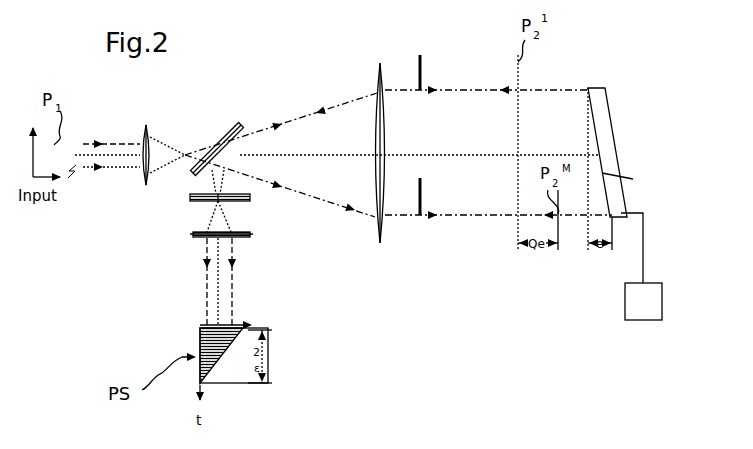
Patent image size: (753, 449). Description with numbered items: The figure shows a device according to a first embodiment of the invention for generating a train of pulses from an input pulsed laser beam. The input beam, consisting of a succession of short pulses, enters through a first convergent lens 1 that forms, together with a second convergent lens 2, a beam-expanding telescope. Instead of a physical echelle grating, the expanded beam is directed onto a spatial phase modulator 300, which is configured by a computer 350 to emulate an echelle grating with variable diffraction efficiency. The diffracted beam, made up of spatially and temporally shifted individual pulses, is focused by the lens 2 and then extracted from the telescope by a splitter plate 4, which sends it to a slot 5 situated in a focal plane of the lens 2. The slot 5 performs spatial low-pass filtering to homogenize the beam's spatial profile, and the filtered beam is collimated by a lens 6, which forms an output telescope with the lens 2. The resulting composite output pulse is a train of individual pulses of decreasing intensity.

The convergent lens 1 is at (150, 131).
The convergent lens 2 is at (376, 78).
The splitter plate 4 is at (230, 127).
The slot 5 is at (196, 200).
The lens 6 is at (251, 235).
The spatial phase modulator 300 is at (613, 130).
The computer 350 is at (625, 300).